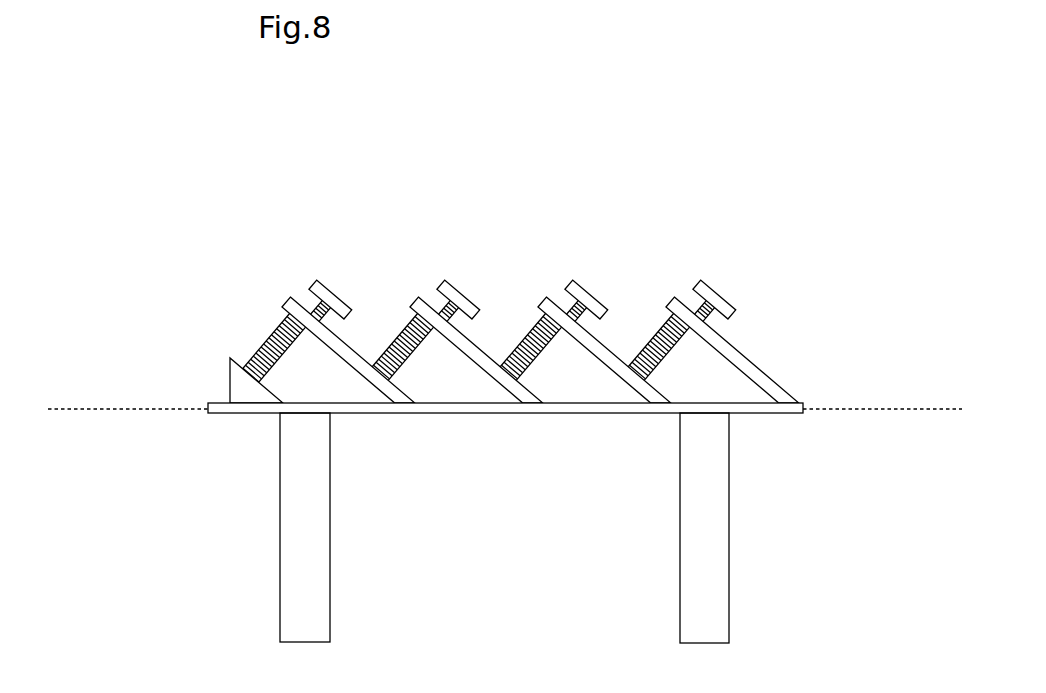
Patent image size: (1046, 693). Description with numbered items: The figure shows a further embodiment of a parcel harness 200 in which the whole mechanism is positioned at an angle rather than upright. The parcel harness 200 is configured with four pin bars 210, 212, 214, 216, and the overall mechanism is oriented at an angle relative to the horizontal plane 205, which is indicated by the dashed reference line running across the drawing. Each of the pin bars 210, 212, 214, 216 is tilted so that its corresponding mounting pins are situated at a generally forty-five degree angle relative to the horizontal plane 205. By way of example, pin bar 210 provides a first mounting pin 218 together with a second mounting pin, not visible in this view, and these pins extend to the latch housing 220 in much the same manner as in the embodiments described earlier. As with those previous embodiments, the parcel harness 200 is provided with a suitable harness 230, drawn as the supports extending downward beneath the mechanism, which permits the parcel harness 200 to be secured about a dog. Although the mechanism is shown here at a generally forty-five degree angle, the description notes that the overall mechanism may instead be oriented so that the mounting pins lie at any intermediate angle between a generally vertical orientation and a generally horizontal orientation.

The parcel harness 200 is at (554, 198).
The horizontal plane 205 is at (107, 414).
The pin bar 210 is at (276, 350).
The pin bar 212 is at (457, 289).
The pin bar 214 is at (594, 291).
The pin bar 216 is at (719, 294).
The first mounting pin 218 is at (264, 352).
The latch housing 220 is at (264, 392).
The harness 230 is at (710, 553).